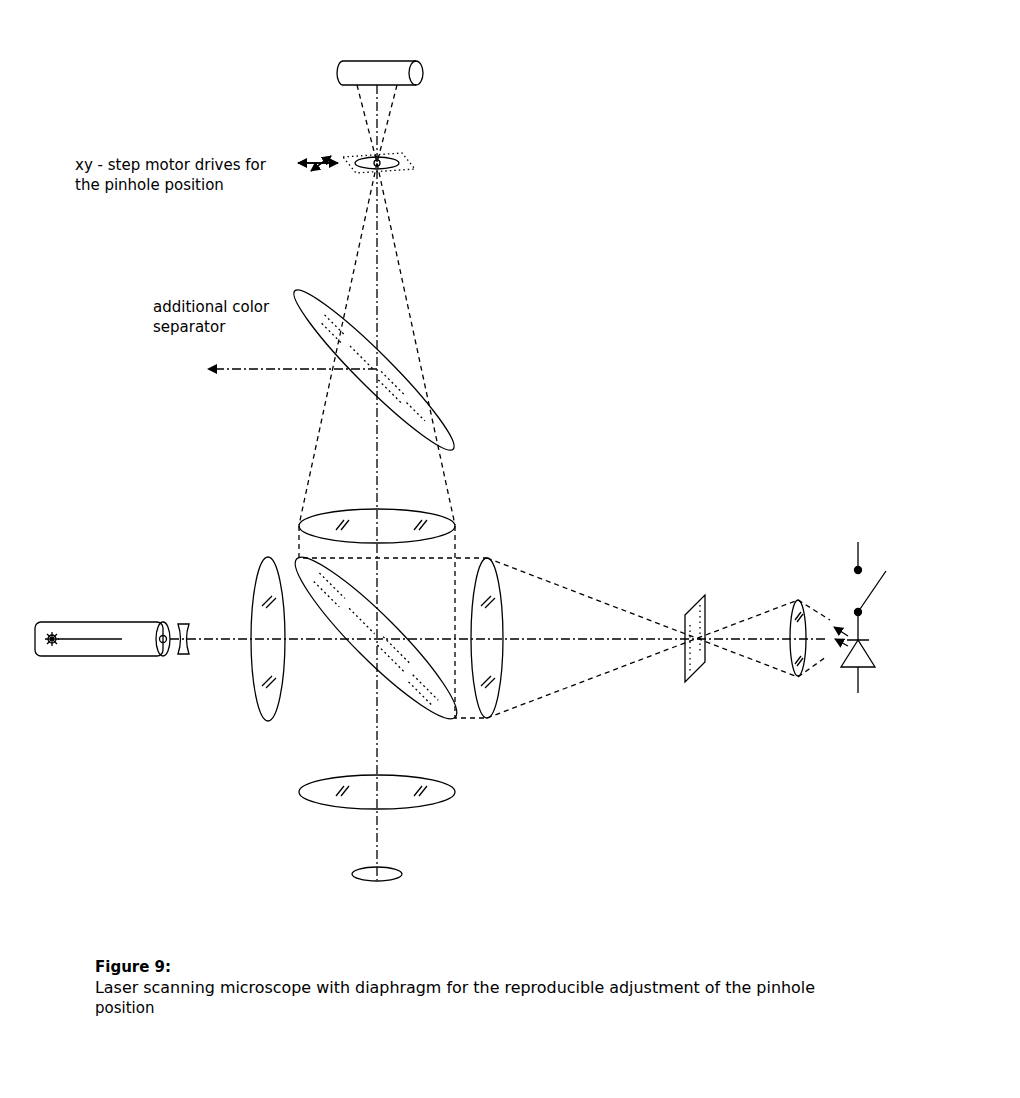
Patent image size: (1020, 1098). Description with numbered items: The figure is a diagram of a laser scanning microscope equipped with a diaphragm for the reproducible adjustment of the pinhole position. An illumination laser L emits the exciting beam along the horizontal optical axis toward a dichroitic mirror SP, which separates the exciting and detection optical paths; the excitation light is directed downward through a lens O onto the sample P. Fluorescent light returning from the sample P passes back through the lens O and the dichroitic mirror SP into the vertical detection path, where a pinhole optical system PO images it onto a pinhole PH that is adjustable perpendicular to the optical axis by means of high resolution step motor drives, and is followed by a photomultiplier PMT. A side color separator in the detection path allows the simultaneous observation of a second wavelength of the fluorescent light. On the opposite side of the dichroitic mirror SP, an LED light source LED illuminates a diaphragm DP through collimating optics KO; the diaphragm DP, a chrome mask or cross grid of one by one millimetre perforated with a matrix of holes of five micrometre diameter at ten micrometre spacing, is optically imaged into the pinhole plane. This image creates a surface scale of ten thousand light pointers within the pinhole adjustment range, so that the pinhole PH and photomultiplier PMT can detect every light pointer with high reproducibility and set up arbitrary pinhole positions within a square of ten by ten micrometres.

The photomultiplier PMT is at (370, 54).
The pinhole PH is at (501, 163).
The pinhole optical system PO is at (395, 524).
The dichroitic mirror SP is at (352, 660).
The illumination laser L is at (112, 659).
The diaphragm DP is at (685, 622).
The collimating optics KO is at (792, 619).
The LED (RGB) LED is at (844, 641).
The lens O is at (399, 792).
The sample P is at (390, 877).